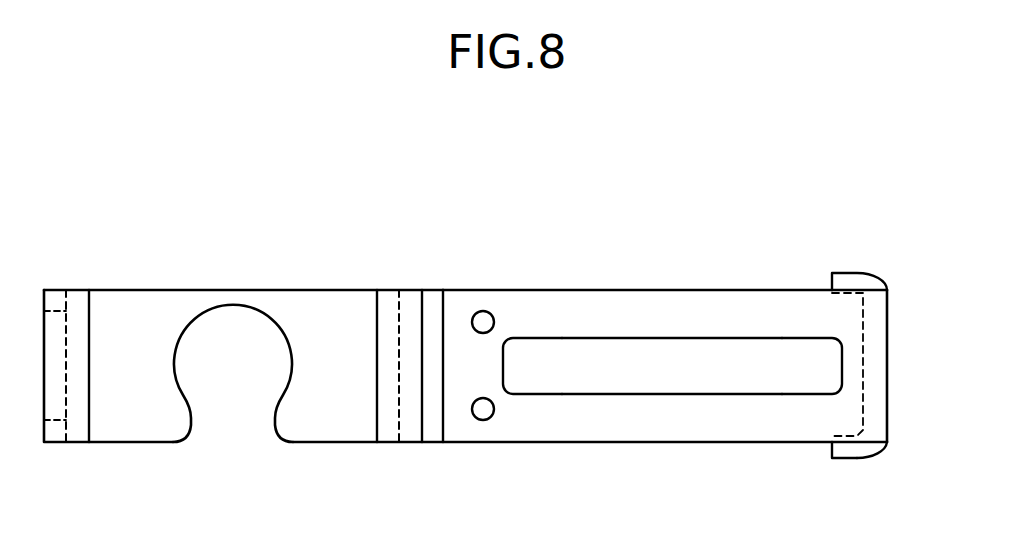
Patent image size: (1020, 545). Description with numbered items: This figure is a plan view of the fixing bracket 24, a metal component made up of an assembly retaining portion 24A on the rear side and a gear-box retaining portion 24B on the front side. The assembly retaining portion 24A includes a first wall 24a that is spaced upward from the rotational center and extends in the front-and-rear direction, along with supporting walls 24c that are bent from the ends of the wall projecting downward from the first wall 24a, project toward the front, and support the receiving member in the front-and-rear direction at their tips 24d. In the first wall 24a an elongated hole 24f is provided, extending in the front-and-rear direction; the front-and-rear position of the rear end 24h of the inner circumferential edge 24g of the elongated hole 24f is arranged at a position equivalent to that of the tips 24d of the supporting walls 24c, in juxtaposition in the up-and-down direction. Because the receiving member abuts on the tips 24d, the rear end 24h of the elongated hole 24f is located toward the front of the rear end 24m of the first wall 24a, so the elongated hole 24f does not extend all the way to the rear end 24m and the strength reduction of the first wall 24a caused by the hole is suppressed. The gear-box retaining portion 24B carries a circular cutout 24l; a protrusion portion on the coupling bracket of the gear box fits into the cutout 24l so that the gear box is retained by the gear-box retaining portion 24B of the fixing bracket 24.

The fixing bracket 24 is at (422, 195).
The assembly retaining portion 24A is at (671, 377).
The gear-box retaining portion 24B is at (168, 355).
The first wall 24a is at (773, 307).
The supporting walls 24c is at (853, 453).
The tips 24d is at (832, 452).
The elongated hole 24f is at (668, 367).
The inner circumferential edge 24g is at (562, 340).
The rear end 24h is at (837, 367).
The cutout 24l is at (283, 337).
The rear end 24m is at (888, 370).